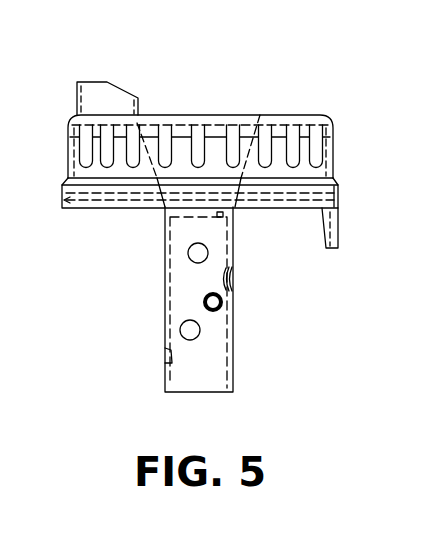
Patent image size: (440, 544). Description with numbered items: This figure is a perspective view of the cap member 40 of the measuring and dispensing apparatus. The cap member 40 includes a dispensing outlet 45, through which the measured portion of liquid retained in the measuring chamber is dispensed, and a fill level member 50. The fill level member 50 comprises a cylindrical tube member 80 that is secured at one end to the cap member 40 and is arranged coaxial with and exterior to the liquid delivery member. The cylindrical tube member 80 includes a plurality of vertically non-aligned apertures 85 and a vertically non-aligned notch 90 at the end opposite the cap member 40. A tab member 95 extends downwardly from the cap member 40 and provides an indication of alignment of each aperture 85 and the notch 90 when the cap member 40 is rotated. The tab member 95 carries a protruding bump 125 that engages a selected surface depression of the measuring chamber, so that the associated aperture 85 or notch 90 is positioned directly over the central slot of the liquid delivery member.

The cap member 40 is at (286, 114).
The dispensing outlet 45 is at (92, 80).
The fill level member 50 is at (116, 307).
The cylindrical tube member 80 is at (190, 278).
The apertures 85 is at (200, 331).
The notch 90 is at (167, 377).
The tab member 95 is at (337, 226).
The protruding bump 125 is at (323, 241).